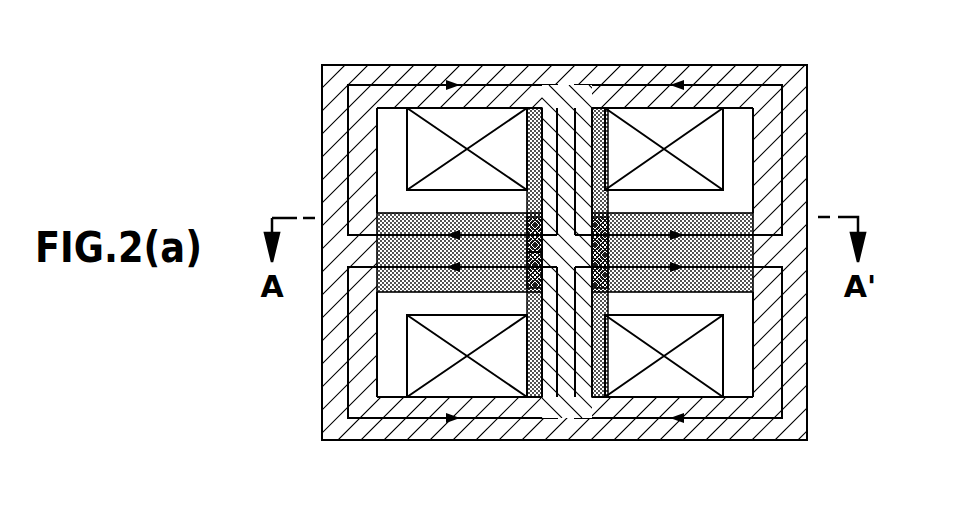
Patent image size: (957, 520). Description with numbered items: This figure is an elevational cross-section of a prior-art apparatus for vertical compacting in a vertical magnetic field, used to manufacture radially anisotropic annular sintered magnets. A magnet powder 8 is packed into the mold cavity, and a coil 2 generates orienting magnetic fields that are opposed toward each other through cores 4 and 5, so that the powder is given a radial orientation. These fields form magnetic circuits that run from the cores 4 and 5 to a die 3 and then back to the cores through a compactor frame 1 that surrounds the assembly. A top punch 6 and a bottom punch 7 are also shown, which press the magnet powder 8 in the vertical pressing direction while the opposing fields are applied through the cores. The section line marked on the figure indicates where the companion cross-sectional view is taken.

The yoke casing 1 is at (808, 118).
The coil 2 is at (715, 137).
The movable plate 3 is at (620, 247).
The center core 4 is at (582, 118).
The permanent magnet 5 is at (585, 350).
The permanent magnet 6 is at (533, 118).
The permanent magnet 7 is at (533, 387).
The center pole 8 is at (562, 340).